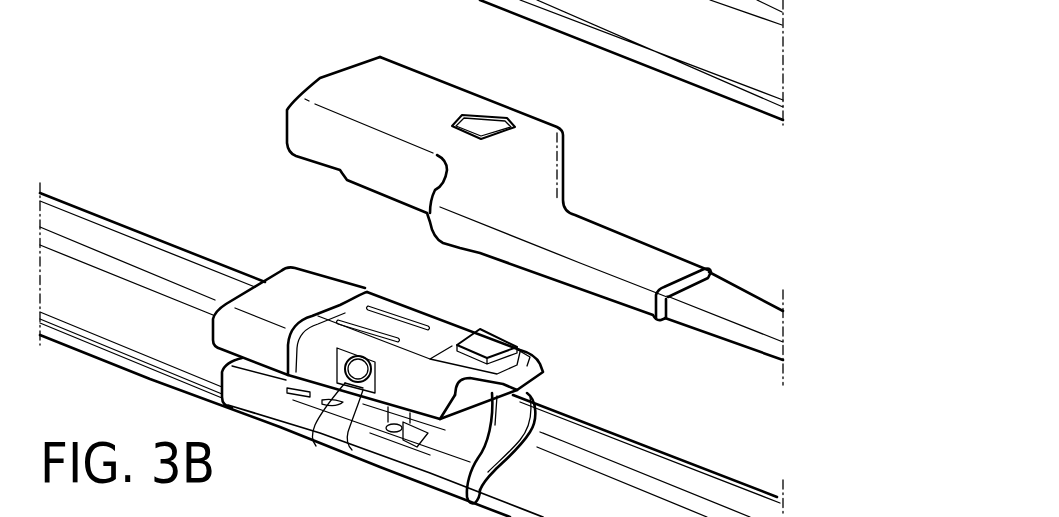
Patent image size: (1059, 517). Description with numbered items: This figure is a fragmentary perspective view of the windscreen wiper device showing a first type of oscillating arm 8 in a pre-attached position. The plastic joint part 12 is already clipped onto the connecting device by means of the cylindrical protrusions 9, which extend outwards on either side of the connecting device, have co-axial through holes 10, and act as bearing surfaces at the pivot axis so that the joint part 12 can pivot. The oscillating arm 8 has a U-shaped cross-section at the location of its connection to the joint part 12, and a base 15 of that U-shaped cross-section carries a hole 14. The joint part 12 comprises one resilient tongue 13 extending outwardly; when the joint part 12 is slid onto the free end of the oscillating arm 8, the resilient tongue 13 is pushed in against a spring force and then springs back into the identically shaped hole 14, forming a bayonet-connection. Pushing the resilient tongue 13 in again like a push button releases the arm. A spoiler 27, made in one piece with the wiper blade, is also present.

The oscillating arm 8 is at (745, 313).
The cylindrical protrusions 9 is at (358, 386).
The co-axial through holes 10 is at (357, 372).
The joint part 12 is at (387, 328).
The resilient tongue 13 is at (490, 343).
The hole 14 is at (481, 130).
The base 15 is at (360, 87).
The spoiler 27 is at (643, 457).